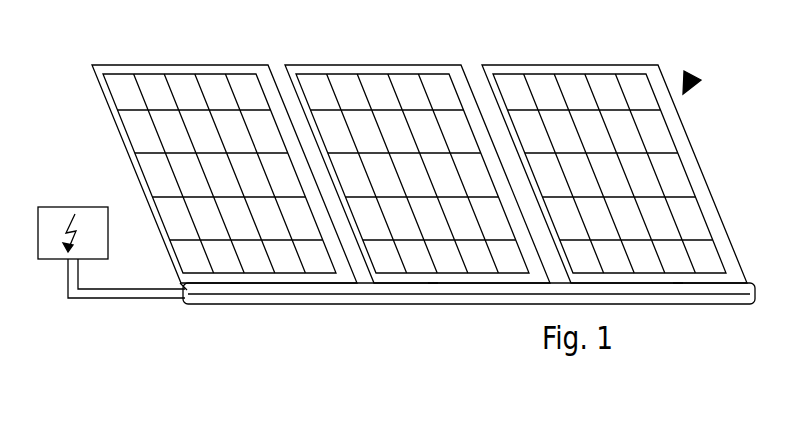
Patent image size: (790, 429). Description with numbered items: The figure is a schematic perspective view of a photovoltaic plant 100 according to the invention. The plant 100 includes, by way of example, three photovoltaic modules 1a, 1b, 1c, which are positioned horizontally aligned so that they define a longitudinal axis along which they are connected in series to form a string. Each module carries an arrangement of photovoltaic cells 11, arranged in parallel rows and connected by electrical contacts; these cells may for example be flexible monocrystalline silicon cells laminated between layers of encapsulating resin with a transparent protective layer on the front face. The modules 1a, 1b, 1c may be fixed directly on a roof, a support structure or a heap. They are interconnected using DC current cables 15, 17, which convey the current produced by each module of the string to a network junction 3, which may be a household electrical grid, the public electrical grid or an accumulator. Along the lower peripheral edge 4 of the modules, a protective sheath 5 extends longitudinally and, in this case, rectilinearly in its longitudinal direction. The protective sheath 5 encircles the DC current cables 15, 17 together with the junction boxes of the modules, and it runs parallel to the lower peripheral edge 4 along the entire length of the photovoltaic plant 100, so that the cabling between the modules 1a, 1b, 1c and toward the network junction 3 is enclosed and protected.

The photovoltaic module 1a is at (224, 145).
The photovoltaic module 1b is at (375, 65).
The photovoltaic module 1c is at (570, 65).
The photovoltaic cells 11 is at (243, 93).
The photovoltaic plant 100 is at (700, 80).
The network junction 3 is at (72, 207).
The lower peripheral edge 4 is at (235, 282).
The protective sheath 5 is at (297, 304).
The DC current cable 15 is at (115, 290).
The DC current cable 17 is at (127, 305).